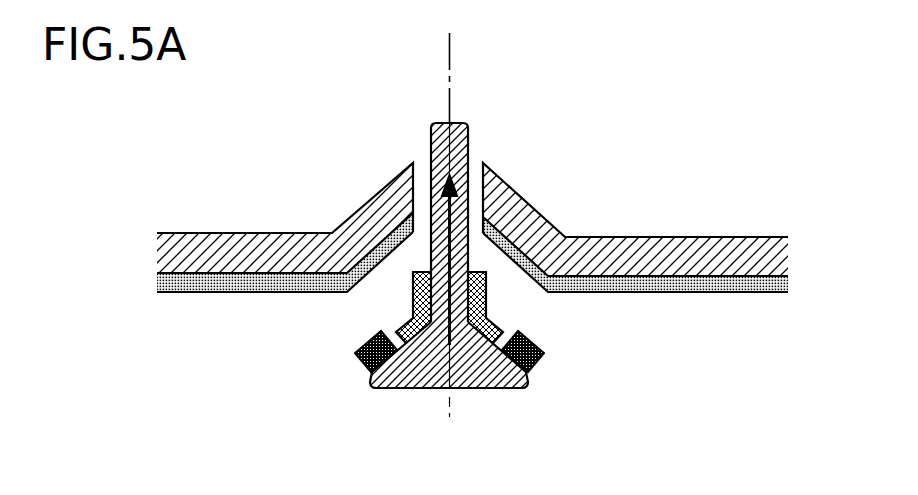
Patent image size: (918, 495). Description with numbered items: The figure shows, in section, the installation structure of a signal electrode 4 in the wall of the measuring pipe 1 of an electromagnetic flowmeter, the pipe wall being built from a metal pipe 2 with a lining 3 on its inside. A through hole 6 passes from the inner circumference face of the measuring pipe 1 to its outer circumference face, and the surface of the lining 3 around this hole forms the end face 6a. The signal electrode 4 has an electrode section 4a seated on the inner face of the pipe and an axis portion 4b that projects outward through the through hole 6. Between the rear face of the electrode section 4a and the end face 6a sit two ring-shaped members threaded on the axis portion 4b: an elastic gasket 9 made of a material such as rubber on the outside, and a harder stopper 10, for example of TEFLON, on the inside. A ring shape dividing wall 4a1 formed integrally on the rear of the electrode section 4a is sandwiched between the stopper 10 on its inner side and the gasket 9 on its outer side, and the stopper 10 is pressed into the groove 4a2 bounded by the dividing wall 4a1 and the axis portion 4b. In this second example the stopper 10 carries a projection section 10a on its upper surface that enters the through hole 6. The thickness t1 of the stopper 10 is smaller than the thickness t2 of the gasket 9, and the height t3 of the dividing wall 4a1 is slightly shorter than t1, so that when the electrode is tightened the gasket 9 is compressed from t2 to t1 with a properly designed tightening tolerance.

The measuring pipe 1 is at (290, 188).
The metal pipe 2 is at (737, 235).
The lining 3 is at (635, 263).
The signal electrode 4 is at (458, 270).
The electrode section 4a is at (428, 390).
The ring shape dividing wall 4a1 is at (396, 332).
The groove 4a2 is at (413, 306).
The axis portion 4b is at (470, 142).
The through hole 6 is at (423, 187).
The end face 6a is at (397, 231).
The gasket 9 is at (355, 350).
The stopper 10 is at (488, 313).
The projection section 10a is at (520, 245).
The thickness of the stopper t1 is at (404, 322).
The thickness of the gasket t2 is at (355, 353).
The height of the ring shape dividing wall t3 is at (363, 362).